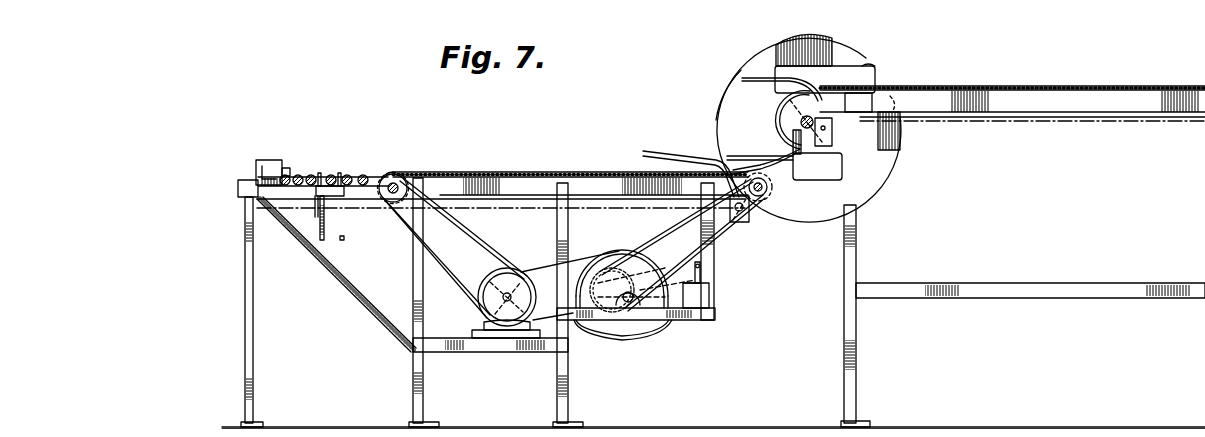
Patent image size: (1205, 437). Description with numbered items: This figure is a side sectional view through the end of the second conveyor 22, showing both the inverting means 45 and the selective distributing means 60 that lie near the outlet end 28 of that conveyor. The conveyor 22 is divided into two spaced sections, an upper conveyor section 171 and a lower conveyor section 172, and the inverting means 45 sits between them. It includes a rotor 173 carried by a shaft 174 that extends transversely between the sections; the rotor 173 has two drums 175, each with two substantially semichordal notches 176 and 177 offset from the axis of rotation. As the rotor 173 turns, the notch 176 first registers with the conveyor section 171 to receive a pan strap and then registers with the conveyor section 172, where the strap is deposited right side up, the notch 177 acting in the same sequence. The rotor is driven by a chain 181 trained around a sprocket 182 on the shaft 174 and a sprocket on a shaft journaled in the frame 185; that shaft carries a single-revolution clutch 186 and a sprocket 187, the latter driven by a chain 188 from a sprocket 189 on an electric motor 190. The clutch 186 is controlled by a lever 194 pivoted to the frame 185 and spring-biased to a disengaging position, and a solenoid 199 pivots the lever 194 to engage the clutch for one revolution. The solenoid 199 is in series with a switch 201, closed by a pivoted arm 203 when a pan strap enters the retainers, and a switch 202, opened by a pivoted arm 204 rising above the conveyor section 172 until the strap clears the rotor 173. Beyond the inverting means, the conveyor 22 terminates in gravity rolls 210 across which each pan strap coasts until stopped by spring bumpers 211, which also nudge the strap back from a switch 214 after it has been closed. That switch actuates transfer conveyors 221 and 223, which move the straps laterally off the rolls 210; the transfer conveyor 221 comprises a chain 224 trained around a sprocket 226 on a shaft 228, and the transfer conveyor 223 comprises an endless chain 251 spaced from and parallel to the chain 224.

The second conveyor 22 is at (1022, 86).
The outlet end of the second conveyor 28 is at (401, 176).
The inverting means 45 is at (836, 36).
The selective distributing means 60 is at (333, 136).
The conveyor section 171 is at (924, 86).
The conveyor section 172 is at (604, 171).
The rotor 173 is at (736, 64).
The shaft 174 is at (776, 118).
The drum 175 is at (793, 40).
The notch (retainer) 176 is at (874, 68).
The notch 177 is at (735, 160).
The chain 181 is at (727, 220).
The sprocket 182 is at (784, 166).
The frame 185 is at (572, 383).
The single-revolution clutch 186 is at (626, 271).
The sprocket 187 is at (648, 330).
The chain 188 is at (588, 332).
The sprocket 189 is at (516, 322).
The electric motor 190 is at (508, 268).
The lever 194 is at (702, 269).
The solenoid 199 is at (710, 296).
The switch 201 is at (900, 146).
The switch 202 is at (751, 214).
The pivoted arm 203 is at (742, 78).
The pivoted arm 204 is at (648, 152).
The gravity rolls 210 is at (286, 174).
The spring bumpers 211 is at (256, 163).
The switch 214 is at (238, 188).
The transfer conveyor 221 is at (317, 172).
The transfer conveyor 223 is at (340, 172).
The chain 224 is at (323, 263).
The sprocket 226 is at (319, 226).
The shaft 228 is at (365, 205).
The endless chain 251 is at (344, 241).